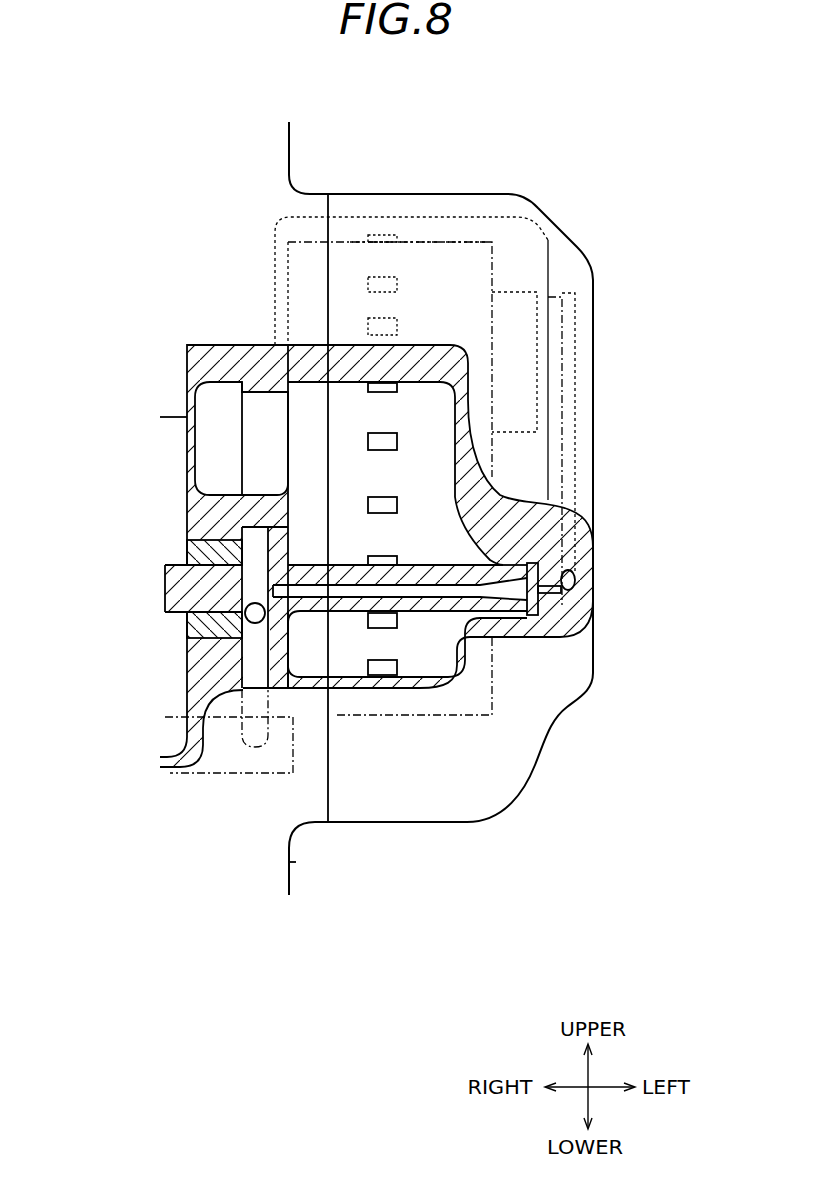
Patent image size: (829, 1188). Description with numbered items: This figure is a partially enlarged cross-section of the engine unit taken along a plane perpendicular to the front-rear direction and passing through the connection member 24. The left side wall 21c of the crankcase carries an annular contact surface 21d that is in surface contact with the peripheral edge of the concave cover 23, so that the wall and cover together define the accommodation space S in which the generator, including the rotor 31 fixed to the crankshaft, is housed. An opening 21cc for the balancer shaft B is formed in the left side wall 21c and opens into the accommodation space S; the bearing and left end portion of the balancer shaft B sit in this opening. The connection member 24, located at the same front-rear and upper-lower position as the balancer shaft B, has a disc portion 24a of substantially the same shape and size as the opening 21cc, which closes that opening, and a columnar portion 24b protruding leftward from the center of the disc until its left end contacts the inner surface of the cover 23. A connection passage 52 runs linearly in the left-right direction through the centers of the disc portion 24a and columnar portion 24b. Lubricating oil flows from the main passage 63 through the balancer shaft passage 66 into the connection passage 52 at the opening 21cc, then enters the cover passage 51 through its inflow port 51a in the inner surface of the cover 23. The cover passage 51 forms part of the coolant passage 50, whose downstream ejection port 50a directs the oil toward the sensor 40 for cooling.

The contact surface 21d is at (332, 208).
The rotor 31 is at (420, 240).
The accommodation space S is at (460, 228).
The cover 23 is at (514, 292).
The sensor 40 is at (555, 297).
The ejection port 50a is at (548, 275).
The cover passage 51 is at (575, 357).
The coolant passage 50 is at (580, 437).
The inflow port 51a is at (537, 605).
The balancer shaft B is at (185, 617).
The opening for the balancer shaft 21cc is at (186, 689).
The main passage 63 is at (268, 775).
The balancer shaft passage 66 is at (318, 632).
The connection member 24 is at (440, 630).
The disc portion 24a is at (336, 672).
The columnar portion 24b is at (410, 612).
The connection passage 52 is at (483, 640).
The left side wall 21c is at (293, 862).